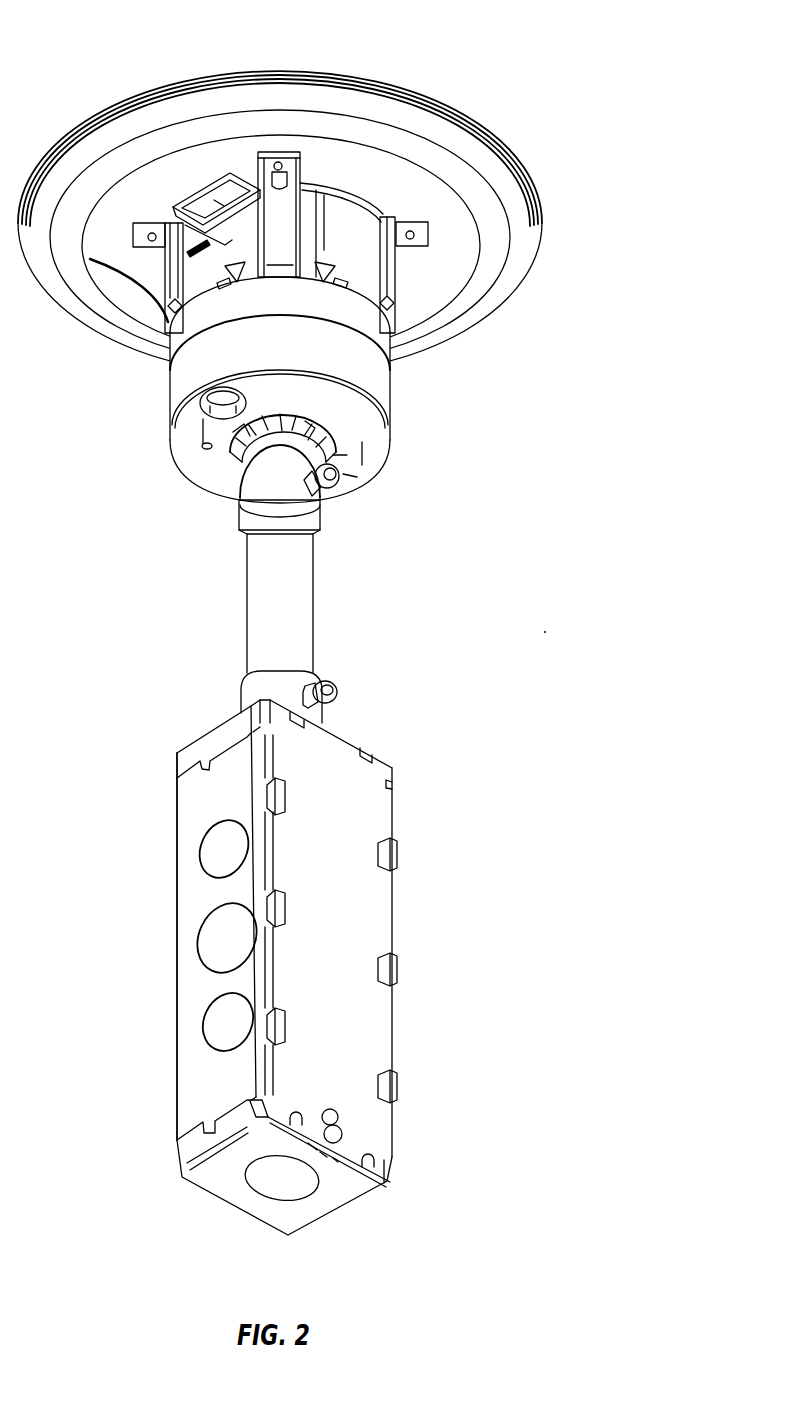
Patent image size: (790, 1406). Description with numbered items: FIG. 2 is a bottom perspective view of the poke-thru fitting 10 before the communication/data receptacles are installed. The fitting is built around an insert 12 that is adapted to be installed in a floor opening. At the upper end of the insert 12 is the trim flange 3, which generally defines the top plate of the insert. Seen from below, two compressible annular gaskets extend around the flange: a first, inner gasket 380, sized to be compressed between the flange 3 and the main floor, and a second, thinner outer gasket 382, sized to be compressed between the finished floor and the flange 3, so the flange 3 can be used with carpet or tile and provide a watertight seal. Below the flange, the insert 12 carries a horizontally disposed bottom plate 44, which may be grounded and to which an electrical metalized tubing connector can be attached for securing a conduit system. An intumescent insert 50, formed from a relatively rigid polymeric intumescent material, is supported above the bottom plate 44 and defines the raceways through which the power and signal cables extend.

The recessed lighting fixture assembly 10 is at (382, 38).
The trim flange 3 is at (486, 130).
The outer gasket 382 is at (527, 210).
The inner gasket 380 is at (492, 242).
The insert 12 is at (407, 426).
The bottom plate 44 is at (206, 478).
The intumescent insert 50 is at (200, 402).